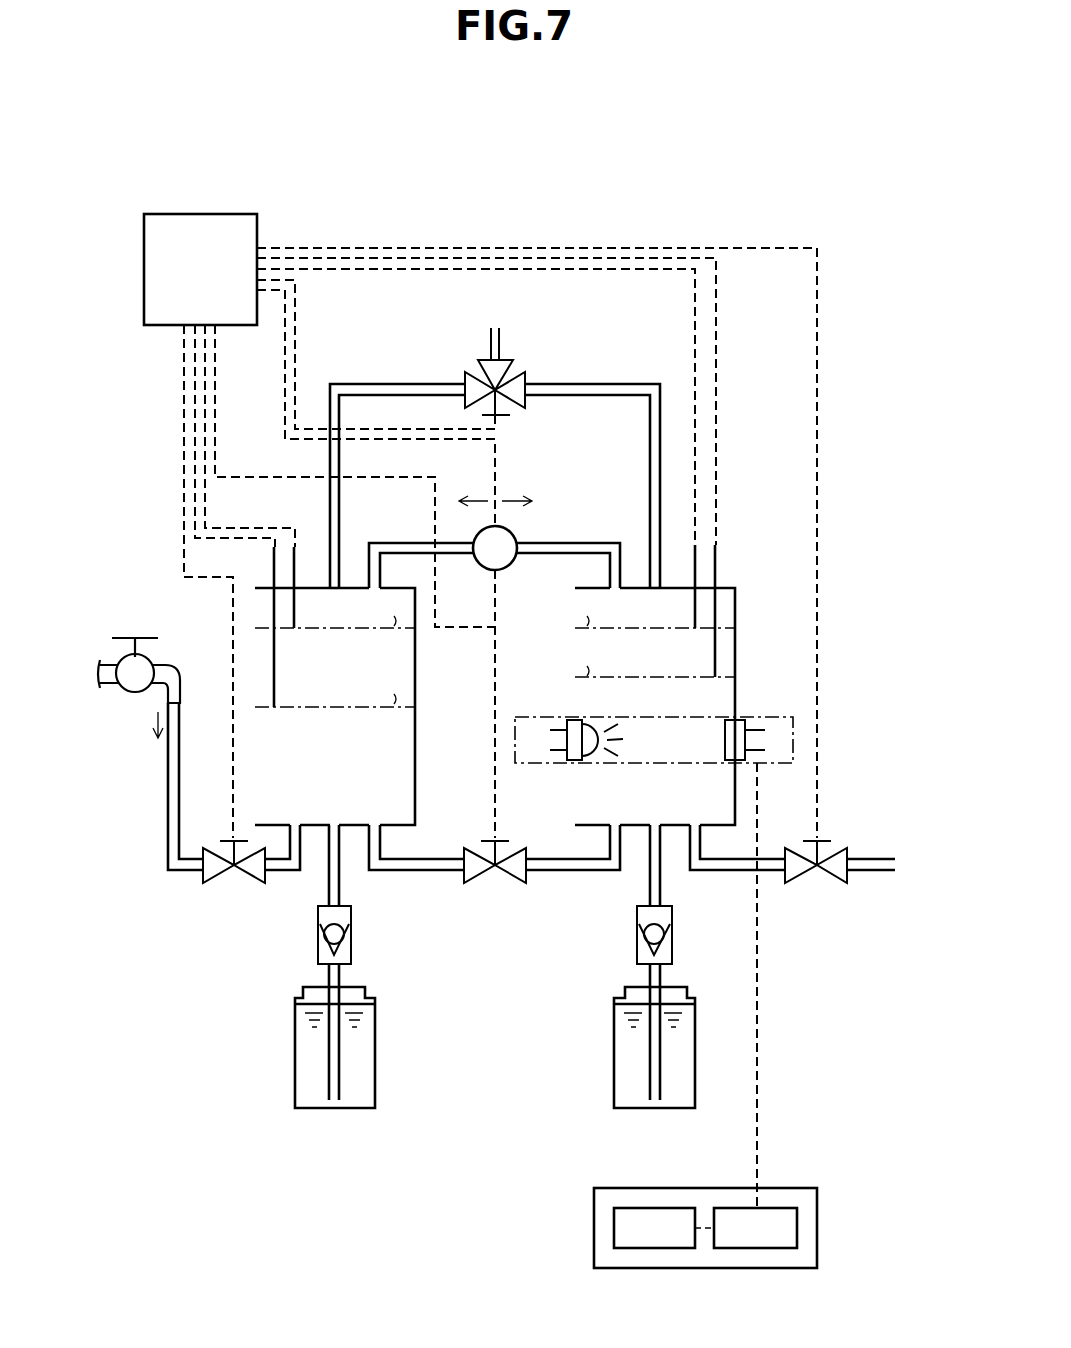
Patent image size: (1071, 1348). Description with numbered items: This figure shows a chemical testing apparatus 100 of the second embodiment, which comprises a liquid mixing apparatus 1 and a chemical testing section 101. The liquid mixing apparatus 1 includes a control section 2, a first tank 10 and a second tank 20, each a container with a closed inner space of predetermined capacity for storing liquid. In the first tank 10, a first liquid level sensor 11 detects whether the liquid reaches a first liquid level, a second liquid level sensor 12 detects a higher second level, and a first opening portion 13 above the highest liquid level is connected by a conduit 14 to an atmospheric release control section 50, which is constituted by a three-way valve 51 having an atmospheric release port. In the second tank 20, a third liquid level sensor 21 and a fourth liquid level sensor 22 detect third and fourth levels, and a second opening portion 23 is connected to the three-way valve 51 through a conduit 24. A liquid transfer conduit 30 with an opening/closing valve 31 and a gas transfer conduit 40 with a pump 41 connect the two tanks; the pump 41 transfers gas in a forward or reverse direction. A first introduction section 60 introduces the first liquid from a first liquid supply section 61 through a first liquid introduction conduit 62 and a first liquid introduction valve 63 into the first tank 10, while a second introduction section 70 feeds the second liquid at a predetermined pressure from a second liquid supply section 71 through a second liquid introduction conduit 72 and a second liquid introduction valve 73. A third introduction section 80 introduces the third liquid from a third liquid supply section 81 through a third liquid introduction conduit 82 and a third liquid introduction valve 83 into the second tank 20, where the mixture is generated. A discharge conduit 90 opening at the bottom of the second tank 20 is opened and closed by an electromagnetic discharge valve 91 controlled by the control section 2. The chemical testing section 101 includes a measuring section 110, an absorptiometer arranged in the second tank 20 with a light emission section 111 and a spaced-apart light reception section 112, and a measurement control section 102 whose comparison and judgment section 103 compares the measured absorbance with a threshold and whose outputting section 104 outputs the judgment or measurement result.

The liquid mixing apparatus 1 is at (461, 196).
The control section 2 is at (195, 214).
The first tank 10 is at (272, 686).
The first liquid level sensor 11 is at (274, 655).
The second liquid level sensor 12 is at (294, 560).
The first opening portion 13 is at (333, 590).
The conduit 14 is at (340, 384).
The second tank 20 is at (729, 685).
The third liquid level sensor 21 is at (716, 645).
The fourth liquid level sensor 22 is at (696, 600).
The second opening portion 23 is at (660, 590).
The conduit 24 is at (645, 384).
The liquid transfer conduit 30 is at (553, 871).
The opening/closing valve 31 is at (487, 880).
The gas transfer conduit 40 is at (494, 547).
The pump 41 is at (487, 570).
The atmospheric release control section 50 is at (490, 399).
The three-way valve 51 is at (487, 357).
The first introduction section 60 is at (311, 966).
The first liquid supply section 61 is at (375, 1073).
The first liquid introduction conduit 62 is at (329, 975).
The first liquid introduction valve 63 is at (318, 940).
The second introduction section 70 is at (199, 793).
The second liquid supply section 71 is at (126, 692).
The second liquid introduction conduit 72 is at (168, 852).
The second liquid introduction valve 73 is at (222, 878).
The third introduction section 80 is at (637, 966).
The third liquid supply section 81 is at (614, 1070).
The third liquid introduction conduit 82 is at (660, 976).
The third liquid introduction valve 83 is at (672, 922).
The discharge conduit 90 is at (725, 871).
The discharge valve 91 is at (805, 878).
The chemical testing apparatus 100 is at (579, 1000).
The chemical testing section 101 is at (743, 1196).
The measurement control section 102 is at (743, 1239).
The comparison and judgment section 103 is at (778, 1248).
The outputting section 104 is at (665, 1248).
The measuring section 110 is at (703, 948).
The light emission section 111 is at (600, 728).
The light reception section 112 is at (725, 728).